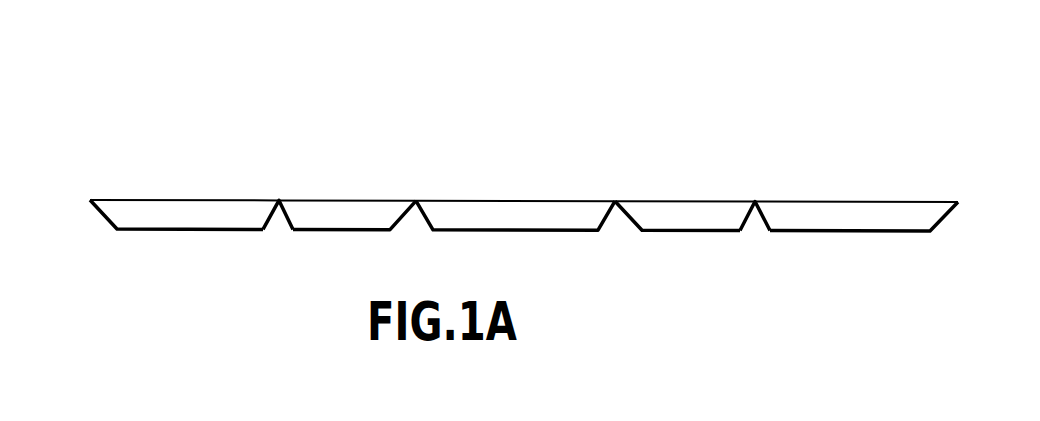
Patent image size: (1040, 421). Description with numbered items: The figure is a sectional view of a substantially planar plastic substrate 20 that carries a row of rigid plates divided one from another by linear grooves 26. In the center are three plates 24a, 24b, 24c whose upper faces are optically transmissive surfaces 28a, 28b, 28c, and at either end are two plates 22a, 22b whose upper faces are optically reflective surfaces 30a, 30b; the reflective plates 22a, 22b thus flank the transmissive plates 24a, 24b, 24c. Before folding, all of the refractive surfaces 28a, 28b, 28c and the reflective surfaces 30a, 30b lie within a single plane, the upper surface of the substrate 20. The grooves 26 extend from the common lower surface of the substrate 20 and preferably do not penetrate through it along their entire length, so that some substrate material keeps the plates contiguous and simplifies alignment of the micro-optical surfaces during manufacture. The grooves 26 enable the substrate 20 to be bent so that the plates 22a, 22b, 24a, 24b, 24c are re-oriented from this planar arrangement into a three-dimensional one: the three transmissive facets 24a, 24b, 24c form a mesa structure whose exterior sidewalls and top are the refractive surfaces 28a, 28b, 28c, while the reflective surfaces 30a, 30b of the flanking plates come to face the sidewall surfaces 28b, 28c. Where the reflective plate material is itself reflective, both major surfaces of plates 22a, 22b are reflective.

The plastic substrate 20 is at (614, 88).
The reflective plate 22a is at (212, 218).
The reflective plate 22b is at (808, 217).
The optically transmissive plate 24a is at (555, 218).
The optically transmissive plate 24b is at (355, 218).
The optically transmissive plate 24c is at (677, 218).
The groove 26 is at (617, 218).
The optically transmissive surface 28a is at (530, 201).
The optically transmissive surface 28b is at (340, 201).
The optically transmissive surface 28c is at (690, 202).
The reflective surface 30a is at (135, 200).
The reflective surface 30b is at (853, 202).